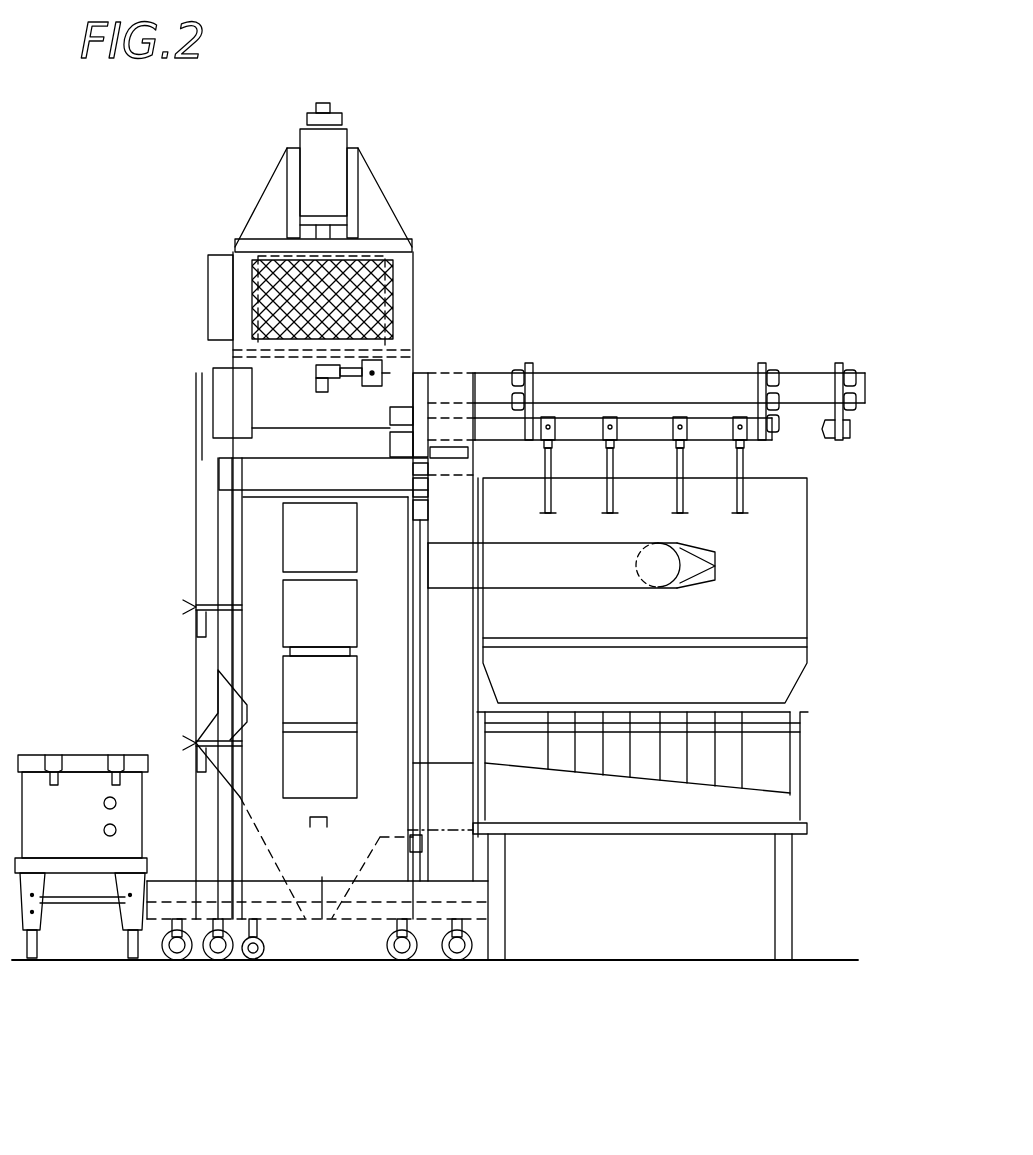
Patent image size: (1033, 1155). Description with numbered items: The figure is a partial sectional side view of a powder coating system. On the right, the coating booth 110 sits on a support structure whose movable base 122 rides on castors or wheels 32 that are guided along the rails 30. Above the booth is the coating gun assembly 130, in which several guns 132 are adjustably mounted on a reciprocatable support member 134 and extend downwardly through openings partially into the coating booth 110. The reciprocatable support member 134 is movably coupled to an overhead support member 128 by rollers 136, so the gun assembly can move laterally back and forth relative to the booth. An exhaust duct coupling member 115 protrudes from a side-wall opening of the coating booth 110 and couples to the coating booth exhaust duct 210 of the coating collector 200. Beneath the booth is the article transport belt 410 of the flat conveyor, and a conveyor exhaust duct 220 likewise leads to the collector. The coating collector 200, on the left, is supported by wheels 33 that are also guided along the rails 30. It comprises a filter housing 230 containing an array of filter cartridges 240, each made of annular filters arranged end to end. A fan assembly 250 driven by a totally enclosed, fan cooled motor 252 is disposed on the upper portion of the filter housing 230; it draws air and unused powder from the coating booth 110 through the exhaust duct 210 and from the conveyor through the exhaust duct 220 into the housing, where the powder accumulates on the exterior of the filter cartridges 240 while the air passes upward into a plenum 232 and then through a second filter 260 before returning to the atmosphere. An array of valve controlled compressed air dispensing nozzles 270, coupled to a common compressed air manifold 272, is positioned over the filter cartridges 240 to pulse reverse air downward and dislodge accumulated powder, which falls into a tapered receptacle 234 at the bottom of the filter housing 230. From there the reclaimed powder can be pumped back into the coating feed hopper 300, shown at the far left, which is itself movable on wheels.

The rails 30 is at (606, 963).
The wheels 32 is at (175, 962).
The wheels 33 is at (262, 962).
The coating booth 110 is at (807, 568).
The exhaust duct coupling member 115 is at (712, 565).
The movable base 122 is at (133, 910).
The overhead support member 128 is at (678, 385).
The coating gun assembly 130 is at (657, 366).
The guns 132 is at (672, 465).
The reciprocatable support member 134 is at (716, 418).
The rollers 136 is at (512, 395).
The coating collector 200 is at (205, 511).
The coating booth exhaust duct 210 is at (600, 578).
The conveyor exhaust duct 220 is at (790, 808).
The filter housing 230 is at (240, 545).
The plenum 232 is at (213, 392).
The tapered receptacle 234 is at (323, 958).
The filter cartridges 240 is at (282, 552).
The fan assembly 250 is at (208, 280).
The motor 252 is at (350, 125).
The second filter 260 is at (273, 323).
The compressed air dispensing nozzles 270 is at (315, 388).
The compressed air manifold 272 is at (387, 368).
The coating feed hopper 300 is at (78, 750).
The article transport belt 410 is at (770, 748).